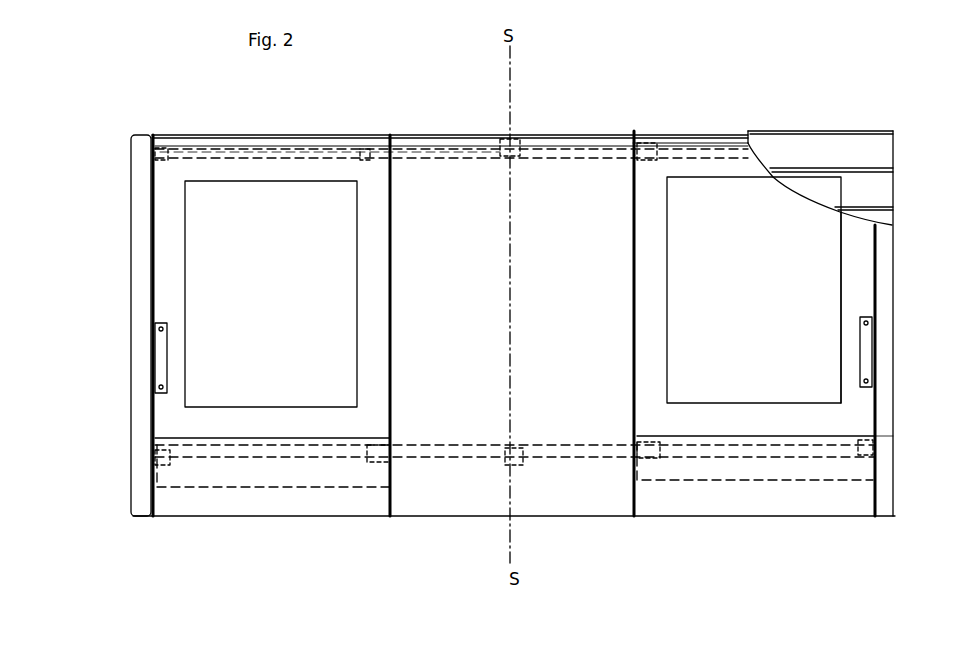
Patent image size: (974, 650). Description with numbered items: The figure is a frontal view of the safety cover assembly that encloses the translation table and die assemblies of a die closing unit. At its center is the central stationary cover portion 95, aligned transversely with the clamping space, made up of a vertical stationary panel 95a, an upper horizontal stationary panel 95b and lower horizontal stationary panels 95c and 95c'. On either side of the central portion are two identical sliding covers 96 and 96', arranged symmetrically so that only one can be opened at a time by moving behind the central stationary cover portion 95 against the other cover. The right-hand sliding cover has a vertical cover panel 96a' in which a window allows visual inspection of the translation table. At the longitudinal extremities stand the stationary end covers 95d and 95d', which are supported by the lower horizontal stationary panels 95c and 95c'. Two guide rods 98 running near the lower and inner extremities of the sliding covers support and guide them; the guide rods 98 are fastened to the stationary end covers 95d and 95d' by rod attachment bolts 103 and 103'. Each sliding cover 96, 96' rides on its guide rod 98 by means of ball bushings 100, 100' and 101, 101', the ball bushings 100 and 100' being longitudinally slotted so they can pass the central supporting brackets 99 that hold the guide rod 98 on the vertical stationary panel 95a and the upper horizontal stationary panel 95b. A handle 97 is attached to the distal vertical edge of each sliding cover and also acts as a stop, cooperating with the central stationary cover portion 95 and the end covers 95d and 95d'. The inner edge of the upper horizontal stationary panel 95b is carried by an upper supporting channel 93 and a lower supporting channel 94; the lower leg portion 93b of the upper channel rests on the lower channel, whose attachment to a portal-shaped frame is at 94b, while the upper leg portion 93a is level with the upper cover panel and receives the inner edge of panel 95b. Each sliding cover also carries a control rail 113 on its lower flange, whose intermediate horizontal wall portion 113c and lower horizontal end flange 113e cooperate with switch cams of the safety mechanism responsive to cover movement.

The upper supporting channel 93 is at (806, 128).
The upper leg portion 93a is at (773, 131).
The lower leg portion 93b is at (845, 168).
The lower supporting channel 94 is at (895, 185).
The attachment point of lower supporting channel 94b is at (893, 203).
The central stationary cover portion 95 is at (574, 520).
The vertical stationary panel 95a is at (553, 185).
The upper horizontal stationary panel 95b is at (580, 134).
The lower horizontal stationary panel 95c is at (303, 536).
The lower horizontal stationary panel 95c' is at (748, 542).
The stationary end cover 95d is at (109, 325).
The stationary end cover 95d' is at (900, 364).
The sliding cover 96 is at (412, 325).
The sliding cover 96' is at (613, 323).
The vertical cover panel 96a' is at (513, 292).
The handle 97 is at (163, 365).
The guide rod 98 is at (448, 152).
The central supporting bracket 99 is at (516, 158).
The ball bushing 100 is at (370, 322).
The ball bushing 100' is at (651, 318).
The ball bushing 101 is at (167, 321).
The ball bushing 101' is at (852, 498).
The rod attachment bolt 103 is at (110, 320).
The rod attachment bolt 103' is at (915, 432).
The control rail 113 is at (223, 492).
The intermediate horizontal wall portion 113c is at (231, 465).
The lower horizontal end flange 113e is at (309, 487).